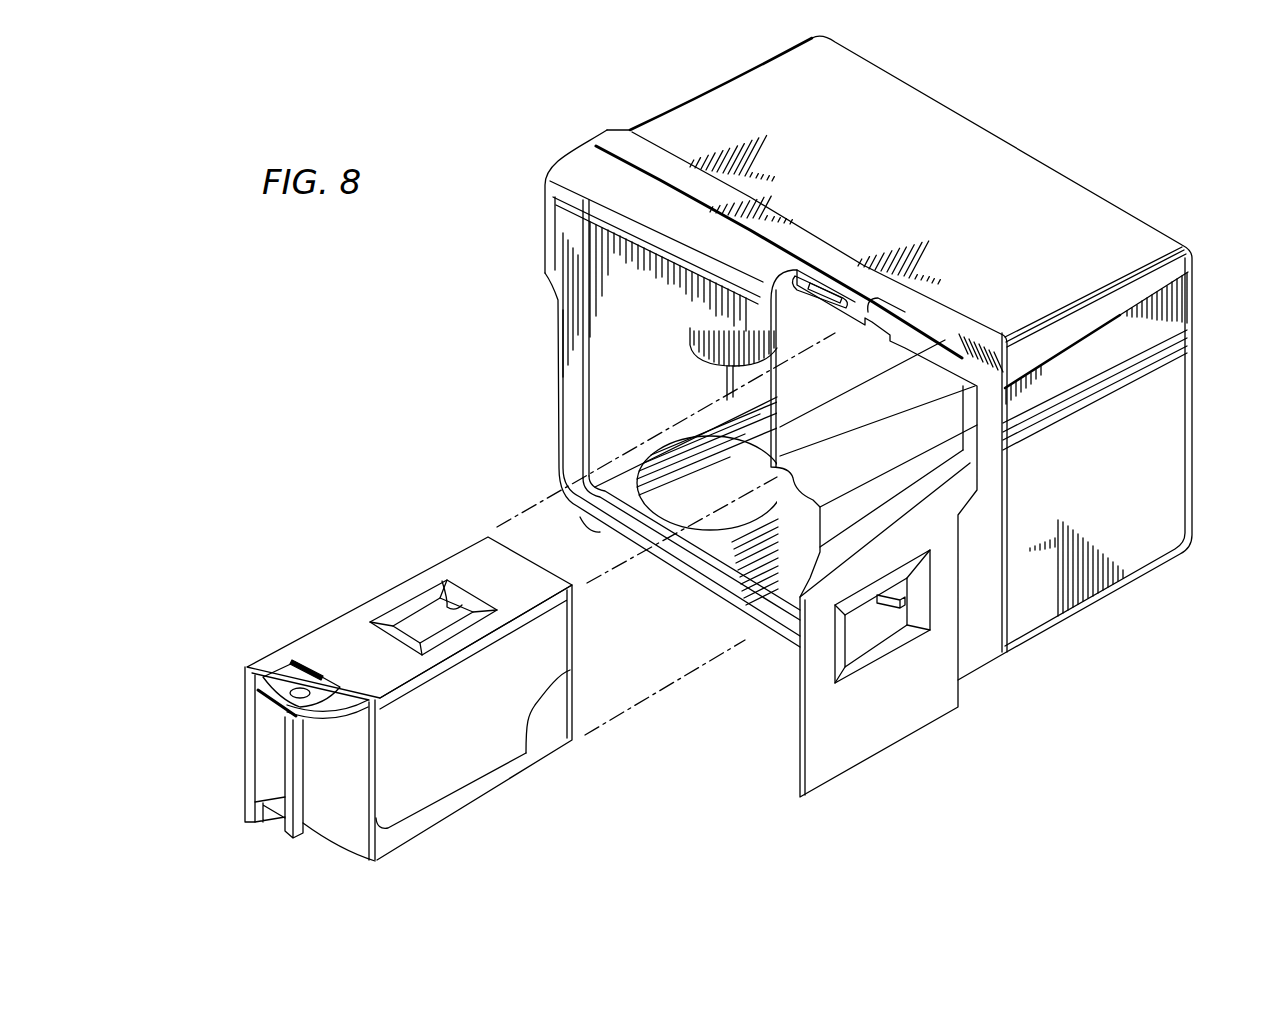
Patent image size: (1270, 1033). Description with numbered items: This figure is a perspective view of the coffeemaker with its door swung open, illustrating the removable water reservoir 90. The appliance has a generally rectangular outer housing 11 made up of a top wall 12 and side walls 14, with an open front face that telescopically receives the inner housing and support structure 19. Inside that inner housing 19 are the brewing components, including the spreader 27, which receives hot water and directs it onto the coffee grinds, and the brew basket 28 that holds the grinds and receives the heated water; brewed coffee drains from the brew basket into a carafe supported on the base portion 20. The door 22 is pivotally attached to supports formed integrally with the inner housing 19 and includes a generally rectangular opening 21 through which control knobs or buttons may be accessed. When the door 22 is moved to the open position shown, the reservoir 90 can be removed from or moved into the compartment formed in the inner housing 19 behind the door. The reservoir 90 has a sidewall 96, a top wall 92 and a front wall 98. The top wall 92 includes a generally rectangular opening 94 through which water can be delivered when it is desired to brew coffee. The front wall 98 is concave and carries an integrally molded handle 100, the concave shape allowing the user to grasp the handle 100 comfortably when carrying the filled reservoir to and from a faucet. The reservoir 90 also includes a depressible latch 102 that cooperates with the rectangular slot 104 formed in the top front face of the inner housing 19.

The outer housing 11 is at (1086, 213).
The top wall 12 is at (932, 195).
The side walls 14 is at (1147, 463).
The inner housing and support structure 19 is at (608, 362).
The base portion 20 is at (723, 548).
The opening 21 is at (876, 657).
The door 22 is at (880, 725).
The spreader 27 is at (612, 398).
The brew basket 28 is at (692, 348).
The reservoir 90 is at (472, 757).
The top wall 92 is at (343, 633).
The opening 94 is at (446, 581).
The sidewall 96 is at (408, 786).
The front wall 98 is at (340, 816).
The handle 100 is at (285, 826).
The depressible latch 102 is at (312, 668).
The slot 104 is at (898, 301).